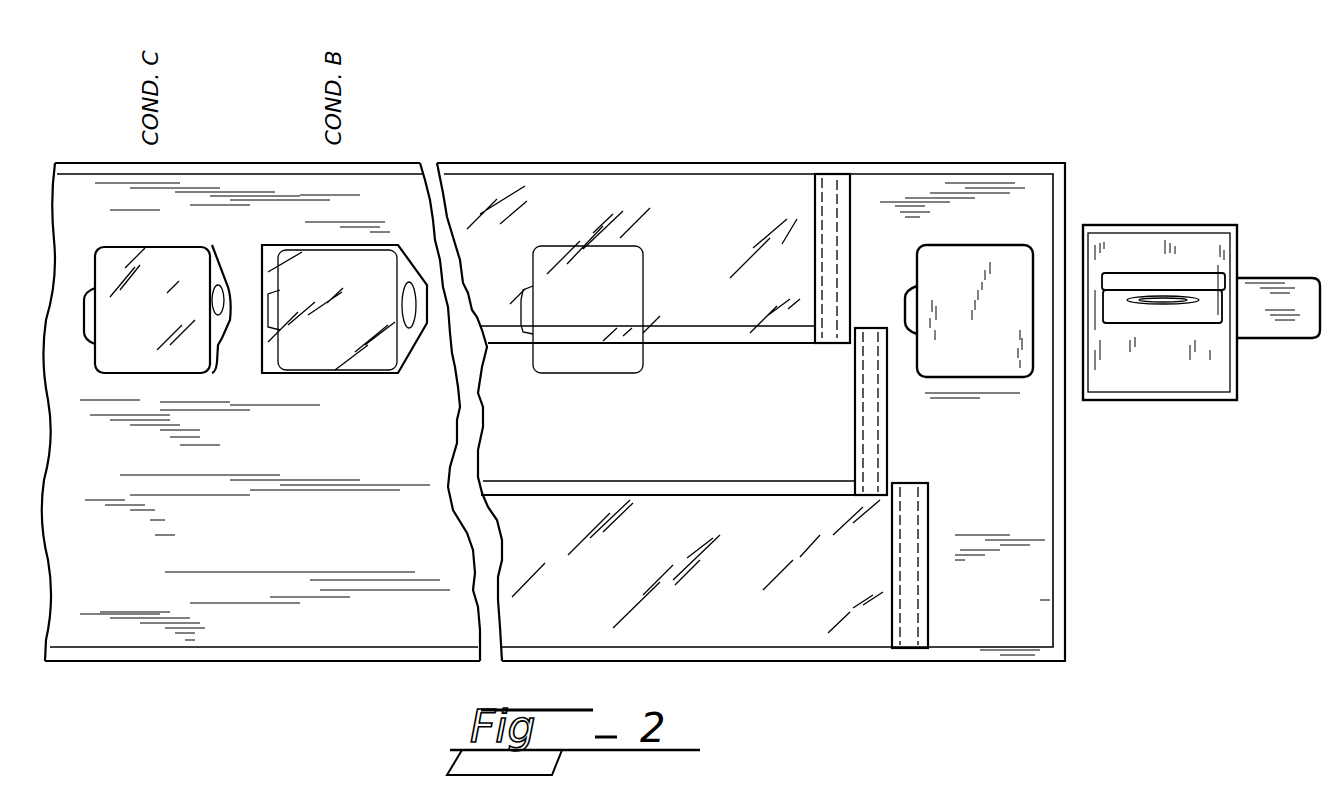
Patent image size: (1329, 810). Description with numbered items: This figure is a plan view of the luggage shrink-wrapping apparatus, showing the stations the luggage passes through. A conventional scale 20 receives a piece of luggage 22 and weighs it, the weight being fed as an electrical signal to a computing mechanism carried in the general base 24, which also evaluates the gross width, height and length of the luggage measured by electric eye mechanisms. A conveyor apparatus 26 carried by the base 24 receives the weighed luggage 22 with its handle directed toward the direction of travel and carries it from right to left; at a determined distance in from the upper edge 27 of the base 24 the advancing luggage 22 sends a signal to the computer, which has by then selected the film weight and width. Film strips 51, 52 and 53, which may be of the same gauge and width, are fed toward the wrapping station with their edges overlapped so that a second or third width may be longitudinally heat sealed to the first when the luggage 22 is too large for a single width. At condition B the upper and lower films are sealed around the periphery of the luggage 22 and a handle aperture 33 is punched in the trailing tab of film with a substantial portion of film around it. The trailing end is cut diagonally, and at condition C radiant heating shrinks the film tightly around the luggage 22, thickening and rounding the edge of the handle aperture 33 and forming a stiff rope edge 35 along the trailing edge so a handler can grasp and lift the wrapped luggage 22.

The scale 20 is at (1290, 278).
The piece of luggage 22 is at (961, 246).
The base 24 is at (1058, 641).
The conveyor apparatus 26 is at (1030, 482).
The upper edge 27 is at (921, 189).
The handle aperture 33 is at (223, 284).
The rope edge 35 is at (217, 366).
The film strip 51 is at (846, 243).
The film strip 52 is at (880, 430).
The film strip 53 is at (918, 524).